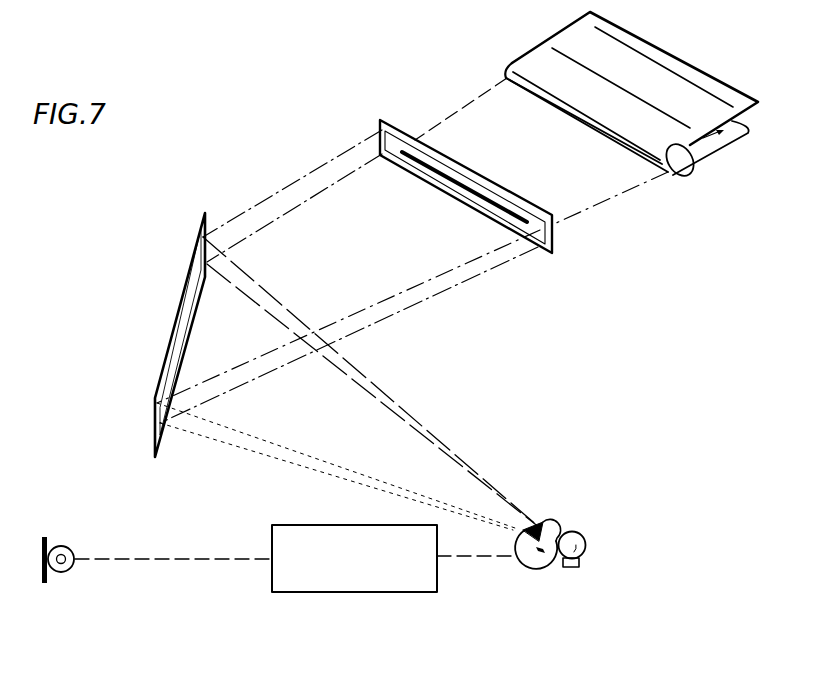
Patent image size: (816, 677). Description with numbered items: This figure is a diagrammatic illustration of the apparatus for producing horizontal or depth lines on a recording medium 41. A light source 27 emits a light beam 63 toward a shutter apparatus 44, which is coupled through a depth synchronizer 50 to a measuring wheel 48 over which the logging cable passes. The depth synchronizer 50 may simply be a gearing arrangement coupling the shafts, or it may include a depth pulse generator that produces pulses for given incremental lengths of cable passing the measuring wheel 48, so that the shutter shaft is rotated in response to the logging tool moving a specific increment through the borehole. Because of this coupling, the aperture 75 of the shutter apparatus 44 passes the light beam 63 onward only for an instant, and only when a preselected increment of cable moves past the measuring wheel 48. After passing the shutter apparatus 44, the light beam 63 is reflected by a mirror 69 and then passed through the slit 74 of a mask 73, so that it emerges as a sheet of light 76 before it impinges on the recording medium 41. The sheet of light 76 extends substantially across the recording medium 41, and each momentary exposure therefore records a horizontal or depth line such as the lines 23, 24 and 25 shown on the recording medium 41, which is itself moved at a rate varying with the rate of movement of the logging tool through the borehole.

The horizontal or depth line 23 is at (680, 62).
The horizontal or depth line 24 is at (602, 77).
The horizontal or depth line 25 is at (558, 83).
The recording medium 41 is at (507, 62).
The mask 73 is at (552, 247).
The slit 74 is at (455, 183).
The sheet of light 76 is at (612, 186).
The mirror 69 is at (176, 322).
The light beam 63 is at (448, 450).
The aperture 75 is at (538, 525).
The shutter apparatus 44 is at (535, 566).
The light source 27 is at (586, 546).
The measuring wheel 48 is at (70, 549).
The depth synchronizer 50 is at (370, 592).